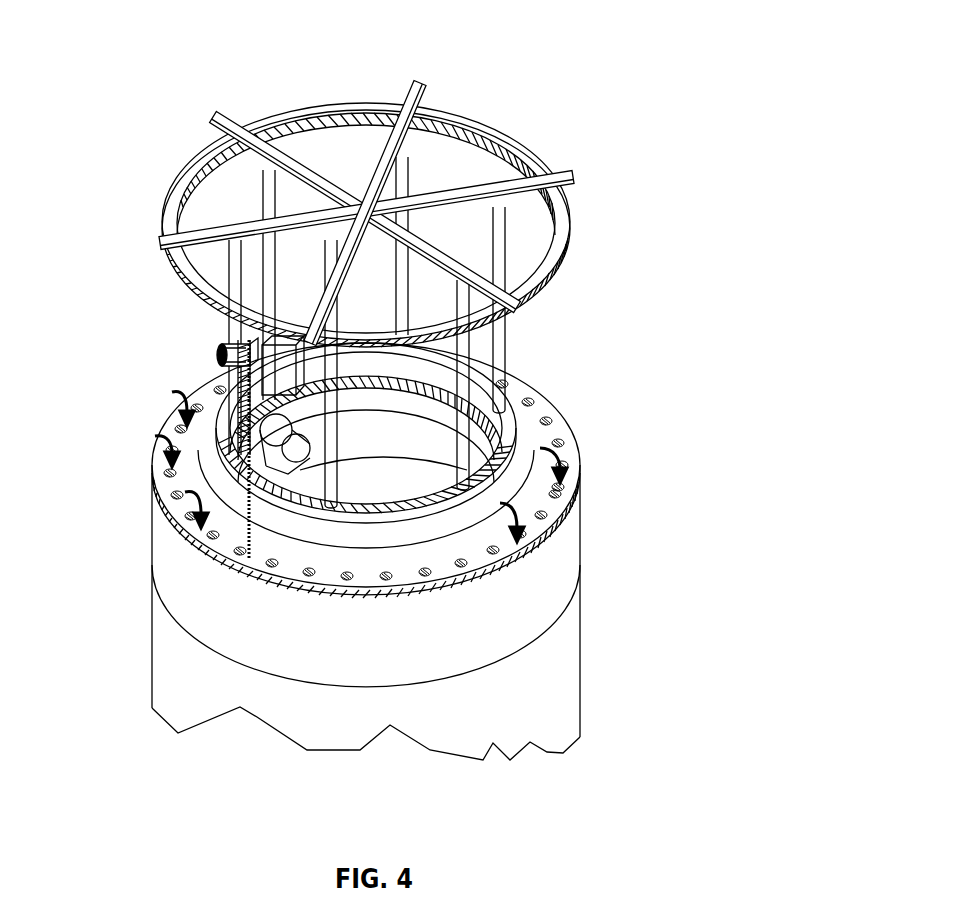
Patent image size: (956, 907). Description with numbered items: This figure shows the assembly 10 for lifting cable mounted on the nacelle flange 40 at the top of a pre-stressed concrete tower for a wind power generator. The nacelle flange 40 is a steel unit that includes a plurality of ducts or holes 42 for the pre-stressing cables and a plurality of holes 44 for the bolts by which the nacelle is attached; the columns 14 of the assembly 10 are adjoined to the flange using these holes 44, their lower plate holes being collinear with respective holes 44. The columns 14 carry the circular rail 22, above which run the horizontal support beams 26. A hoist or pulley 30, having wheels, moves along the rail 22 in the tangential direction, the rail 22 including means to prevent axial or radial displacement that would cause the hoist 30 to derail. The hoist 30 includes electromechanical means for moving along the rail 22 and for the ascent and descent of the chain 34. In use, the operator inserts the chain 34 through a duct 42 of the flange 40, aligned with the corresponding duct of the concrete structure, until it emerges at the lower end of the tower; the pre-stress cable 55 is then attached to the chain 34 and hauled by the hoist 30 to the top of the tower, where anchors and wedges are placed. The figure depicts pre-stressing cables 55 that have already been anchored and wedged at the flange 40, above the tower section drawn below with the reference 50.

The assembly for lifting cable 10 is at (367, 283).
The columns 14 is at (498, 335).
The rail 22 is at (558, 224).
The horizontal support beams 26 is at (215, 135).
The hoist/pulley 30 is at (237, 340).
The chain 34 is at (250, 534).
The nacelle flange 40 is at (553, 567).
The ducts/holes for pre-stress cable 42 is at (555, 500).
The holes for fastening bolts of nacelle flange 44 is at (500, 428).
The tower 50 is at (540, 688).
The pre-stress cable 55 is at (160, 452).